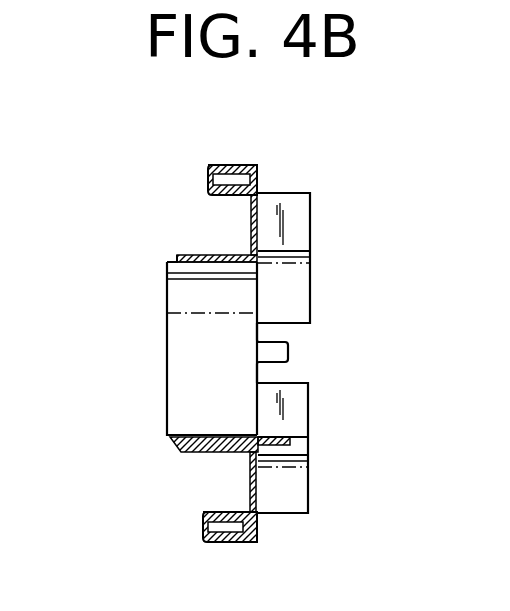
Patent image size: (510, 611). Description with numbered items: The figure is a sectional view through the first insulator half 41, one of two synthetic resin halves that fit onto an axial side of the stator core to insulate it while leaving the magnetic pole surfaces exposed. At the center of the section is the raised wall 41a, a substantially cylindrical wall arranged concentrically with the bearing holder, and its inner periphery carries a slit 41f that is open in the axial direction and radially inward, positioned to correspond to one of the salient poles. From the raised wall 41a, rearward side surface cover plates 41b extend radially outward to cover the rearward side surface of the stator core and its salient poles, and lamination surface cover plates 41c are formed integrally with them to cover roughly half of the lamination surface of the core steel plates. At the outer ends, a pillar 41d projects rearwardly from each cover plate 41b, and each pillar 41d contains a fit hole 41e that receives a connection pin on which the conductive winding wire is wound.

The first insulator half 41 is at (318, 180).
The raised wall 41a is at (212, 262).
The rearward side surface cover plate 41b is at (260, 208).
The lamination surface cover plate 41c is at (300, 218).
The pillar 41d is at (229, 165).
The fit hole 41e is at (208, 182).
The slit 41f is at (243, 258).